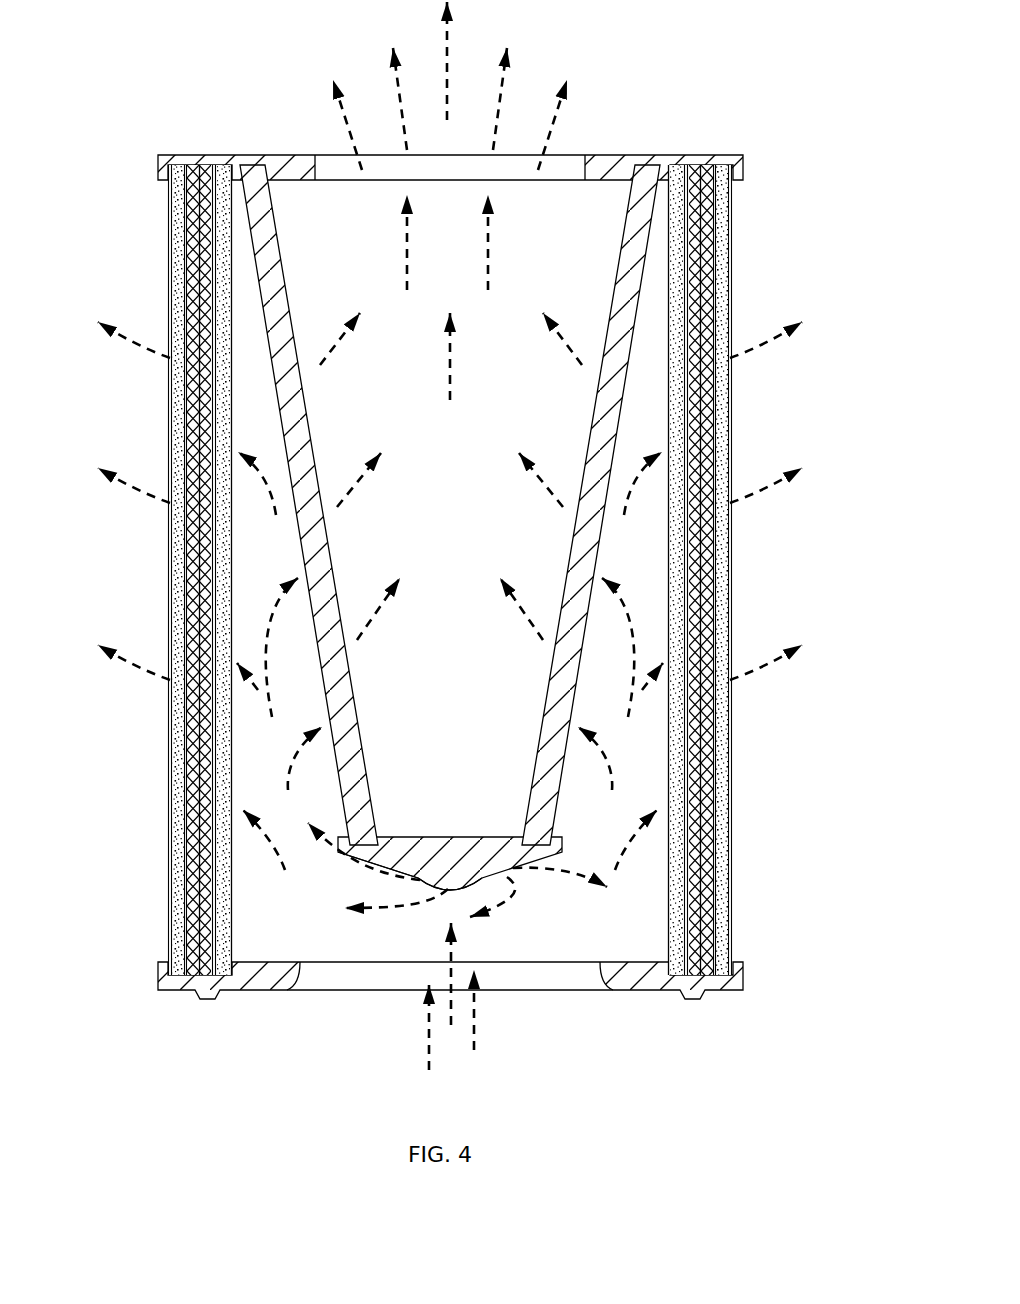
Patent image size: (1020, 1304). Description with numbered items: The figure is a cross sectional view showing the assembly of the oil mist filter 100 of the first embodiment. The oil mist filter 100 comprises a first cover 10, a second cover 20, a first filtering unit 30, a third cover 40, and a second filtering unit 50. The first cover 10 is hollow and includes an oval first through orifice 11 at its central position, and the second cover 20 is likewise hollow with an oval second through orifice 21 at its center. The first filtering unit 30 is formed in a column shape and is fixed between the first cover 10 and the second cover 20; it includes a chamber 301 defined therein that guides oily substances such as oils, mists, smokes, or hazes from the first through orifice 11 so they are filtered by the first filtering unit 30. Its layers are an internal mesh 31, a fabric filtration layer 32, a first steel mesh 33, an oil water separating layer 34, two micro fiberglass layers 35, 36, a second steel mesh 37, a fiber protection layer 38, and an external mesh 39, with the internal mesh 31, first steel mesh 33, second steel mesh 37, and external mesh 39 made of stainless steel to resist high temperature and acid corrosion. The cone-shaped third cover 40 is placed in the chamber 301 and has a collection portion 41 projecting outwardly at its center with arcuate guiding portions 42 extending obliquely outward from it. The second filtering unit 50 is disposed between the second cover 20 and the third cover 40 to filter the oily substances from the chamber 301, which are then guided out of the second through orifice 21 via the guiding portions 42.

The oil mist filter 100 is at (716, 122).
The first cover 10 is at (450, 1031).
The first through orifice 11 is at (354, 982).
The second cover 20 is at (450, 119).
The second through orifice 21 is at (562, 172).
The first filtering unit 30 is at (430, 570).
The chamber 301 is at (640, 770).
The internal mesh 31 is at (173, 222).
The fabric filtration layer 32 is at (182, 257).
The first steel mesh 33 is at (185, 302).
The oil water separating layer 34 is at (192, 778).
The micro fiberglass layer 35 is at (200, 808).
The micro fiberglass layer 36 is at (205, 843).
The second steel mesh 37 is at (213, 883).
The fiber protection layer 38 is at (223, 913).
The external mesh 39 is at (230, 948).
The third cover 40 is at (424, 883).
The collection portion 41 is at (450, 893).
The guiding portion 42 is at (387, 872).
The second filtering unit 50 is at (338, 556).